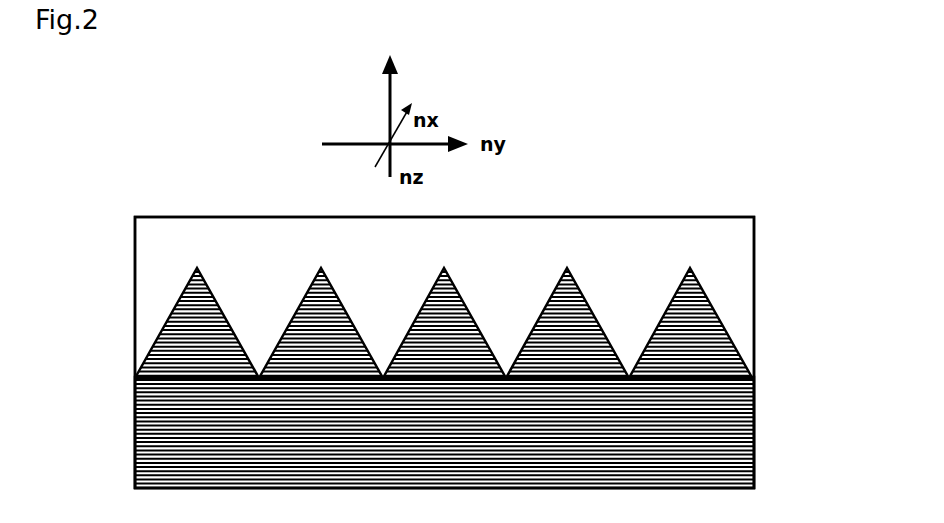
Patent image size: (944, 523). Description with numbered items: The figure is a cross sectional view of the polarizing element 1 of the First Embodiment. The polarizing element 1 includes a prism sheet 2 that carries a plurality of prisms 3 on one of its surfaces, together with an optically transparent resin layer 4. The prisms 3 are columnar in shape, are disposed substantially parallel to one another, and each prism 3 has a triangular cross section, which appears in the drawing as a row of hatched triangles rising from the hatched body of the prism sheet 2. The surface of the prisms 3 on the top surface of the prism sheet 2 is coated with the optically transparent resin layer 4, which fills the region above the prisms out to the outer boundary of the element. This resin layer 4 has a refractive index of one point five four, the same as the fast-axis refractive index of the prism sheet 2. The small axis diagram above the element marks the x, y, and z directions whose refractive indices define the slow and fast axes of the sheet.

The polarizing element 1 is at (673, 188).
The prism sheet 2 is at (670, 440).
The prisms 3 is at (720, 330).
The optically transparent resin layer 4 is at (720, 242).